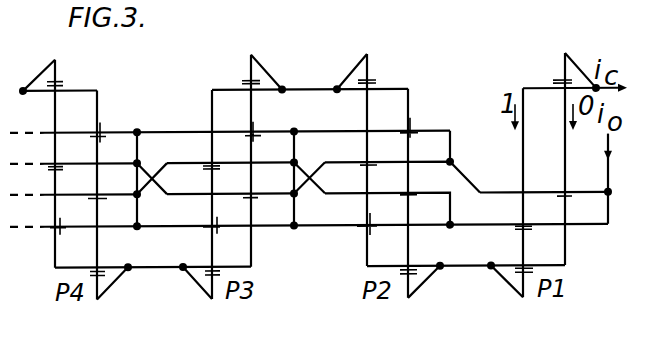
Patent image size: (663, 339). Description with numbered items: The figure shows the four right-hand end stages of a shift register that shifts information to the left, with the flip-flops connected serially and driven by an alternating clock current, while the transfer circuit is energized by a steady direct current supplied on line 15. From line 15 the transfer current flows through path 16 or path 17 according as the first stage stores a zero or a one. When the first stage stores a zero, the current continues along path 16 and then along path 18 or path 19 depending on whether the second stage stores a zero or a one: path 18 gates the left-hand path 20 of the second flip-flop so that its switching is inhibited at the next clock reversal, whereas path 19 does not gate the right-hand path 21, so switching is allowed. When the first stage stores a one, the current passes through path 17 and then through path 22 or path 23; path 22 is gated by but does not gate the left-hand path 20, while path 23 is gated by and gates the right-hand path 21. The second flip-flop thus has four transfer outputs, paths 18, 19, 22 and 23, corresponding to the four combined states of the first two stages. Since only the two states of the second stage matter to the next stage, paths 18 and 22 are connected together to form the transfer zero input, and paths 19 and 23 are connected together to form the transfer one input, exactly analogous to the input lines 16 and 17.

The line 15 is at (608, 166).
The path 16 is at (506, 227).
The path 17 is at (512, 191).
The path 18 is at (352, 226).
The path 19 is at (350, 197).
The left-hand path 20 is at (366, 109).
The right-hand path 21 is at (409, 102).
The path 22 is at (421, 164).
The path 23 is at (452, 146).